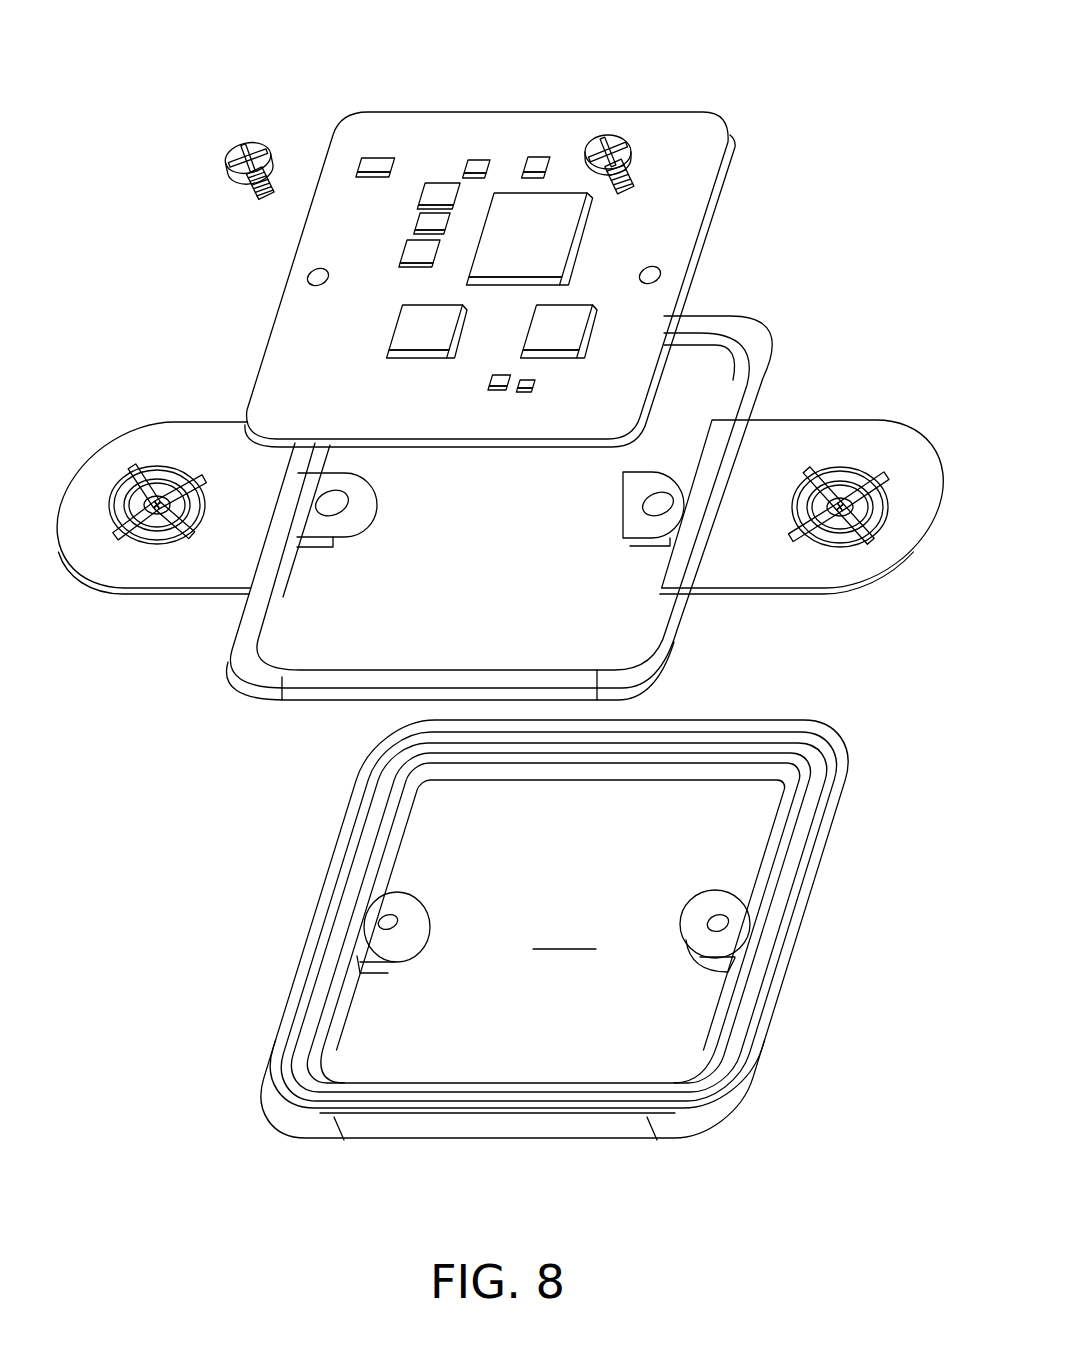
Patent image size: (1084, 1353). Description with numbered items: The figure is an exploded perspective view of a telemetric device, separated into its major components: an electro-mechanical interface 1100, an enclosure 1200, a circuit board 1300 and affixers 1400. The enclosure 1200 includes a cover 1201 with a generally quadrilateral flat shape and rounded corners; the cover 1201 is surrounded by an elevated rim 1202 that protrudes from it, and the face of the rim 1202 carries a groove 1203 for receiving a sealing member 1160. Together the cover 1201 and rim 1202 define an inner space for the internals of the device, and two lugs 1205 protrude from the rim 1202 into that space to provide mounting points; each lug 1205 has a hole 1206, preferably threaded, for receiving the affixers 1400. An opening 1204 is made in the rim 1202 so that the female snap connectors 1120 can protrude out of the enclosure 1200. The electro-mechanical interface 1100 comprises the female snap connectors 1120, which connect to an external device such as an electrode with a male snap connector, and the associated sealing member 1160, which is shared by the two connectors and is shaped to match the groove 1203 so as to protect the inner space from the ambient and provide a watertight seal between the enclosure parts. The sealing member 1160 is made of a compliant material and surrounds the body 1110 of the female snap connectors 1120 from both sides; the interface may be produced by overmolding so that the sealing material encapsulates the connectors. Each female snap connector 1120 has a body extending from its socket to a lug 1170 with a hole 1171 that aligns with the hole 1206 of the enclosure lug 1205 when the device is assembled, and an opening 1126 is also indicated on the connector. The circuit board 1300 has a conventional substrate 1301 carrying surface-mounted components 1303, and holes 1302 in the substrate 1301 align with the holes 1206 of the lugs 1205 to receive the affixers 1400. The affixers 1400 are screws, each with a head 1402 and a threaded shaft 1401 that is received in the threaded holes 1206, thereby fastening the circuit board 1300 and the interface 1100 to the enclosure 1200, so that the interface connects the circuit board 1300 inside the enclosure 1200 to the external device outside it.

The electro-mechanical interface 1100 is at (262, 713).
The body 1110 is at (737, 590).
The female snap connector 1120 is at (153, 448).
The opening 1126 is at (843, 500).
The sealing member 1160 is at (627, 678).
The lug 1170 is at (340, 540).
The hole 1171 is at (658, 494).
The enclosure 1200 is at (690, 1145).
The cover 1201 is at (558, 923).
The rim 1202 is at (320, 1125).
The groove 1203 is at (332, 973).
The opening 1204 is at (792, 927).
The lug 1205 is at (697, 922).
The hole 1206 is at (393, 905).
The circuit board 1300 is at (483, 97).
The substrate 1301 is at (688, 130).
The hole 1302 is at (647, 266).
The component 1303 is at (538, 157).
The affixer 1400 is at (257, 128).
The shaft 1401 is at (260, 183).
The head 1402 is at (223, 178).